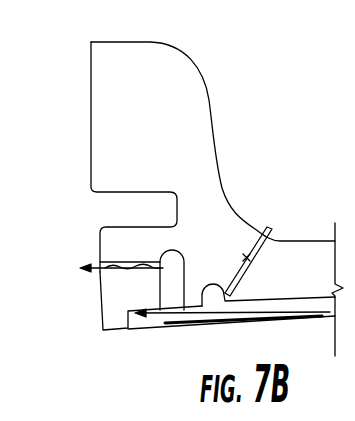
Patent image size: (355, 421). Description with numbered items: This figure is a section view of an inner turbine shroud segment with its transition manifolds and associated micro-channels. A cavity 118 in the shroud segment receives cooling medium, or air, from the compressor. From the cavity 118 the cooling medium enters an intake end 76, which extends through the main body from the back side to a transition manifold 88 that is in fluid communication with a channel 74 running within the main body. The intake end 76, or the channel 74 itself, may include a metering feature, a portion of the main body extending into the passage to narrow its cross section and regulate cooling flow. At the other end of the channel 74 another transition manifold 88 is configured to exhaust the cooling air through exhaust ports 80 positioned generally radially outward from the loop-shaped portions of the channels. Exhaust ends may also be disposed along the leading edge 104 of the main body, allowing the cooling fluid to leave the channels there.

The cavity 118 is at (250, 104).
The leading edge 104 is at (93, 133).
The transition manifold 88 is at (231, 290).
The intake end 76 is at (258, 240).
The exhaust port 80 is at (95, 272).
The channel 74 is at (312, 311).